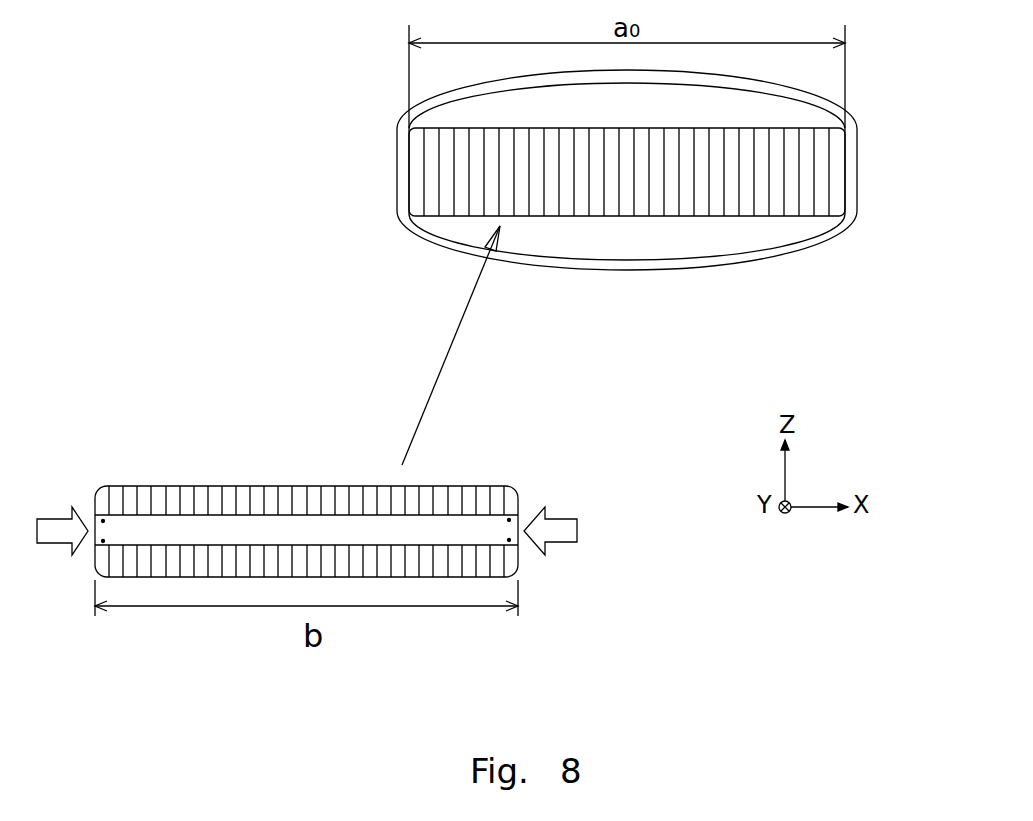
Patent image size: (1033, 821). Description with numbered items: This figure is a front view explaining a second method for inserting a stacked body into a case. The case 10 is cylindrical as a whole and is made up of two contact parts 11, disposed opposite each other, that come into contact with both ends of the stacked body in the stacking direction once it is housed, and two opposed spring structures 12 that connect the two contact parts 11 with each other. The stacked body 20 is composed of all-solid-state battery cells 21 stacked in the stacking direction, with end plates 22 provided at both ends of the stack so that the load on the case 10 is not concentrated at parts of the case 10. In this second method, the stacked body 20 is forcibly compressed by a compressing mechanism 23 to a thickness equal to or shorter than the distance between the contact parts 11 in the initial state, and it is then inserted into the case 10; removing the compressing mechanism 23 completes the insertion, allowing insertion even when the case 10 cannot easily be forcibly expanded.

The case 10 is at (397, 127).
The contact part 11 is at (858, 137).
The spring structure 12 is at (790, 255).
The stacked body 20 is at (185, 484).
The all-solid-state battery cell 21 is at (313, 500).
The end plate 22 is at (510, 500).
The compressing mechanism 23 is at (232, 528).